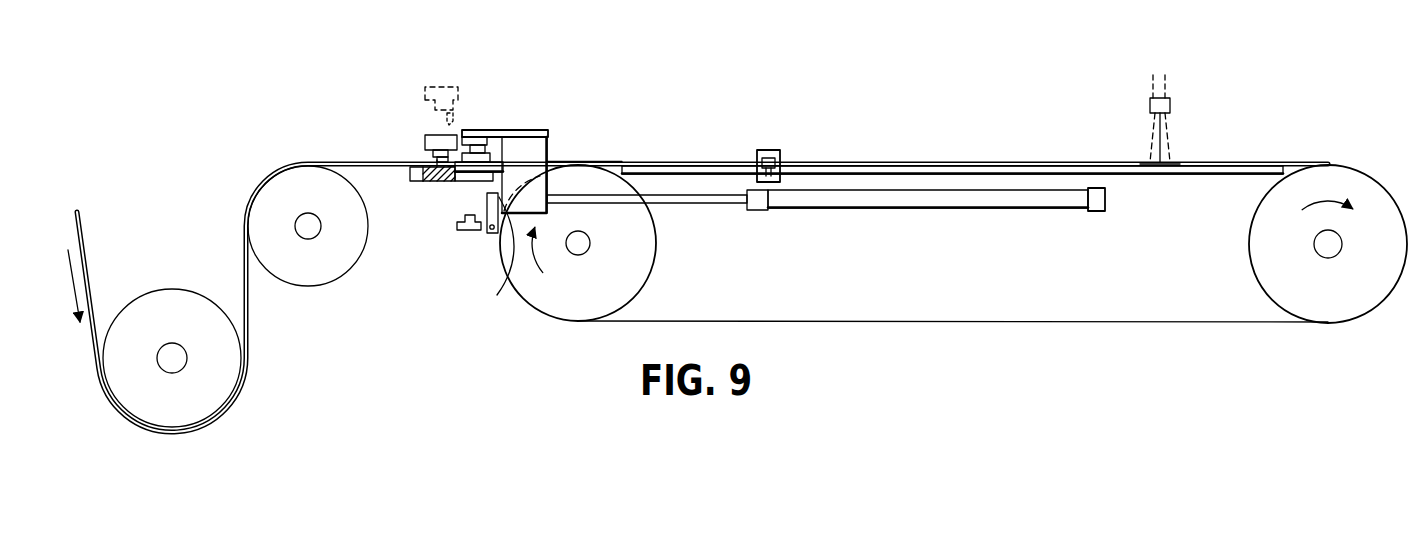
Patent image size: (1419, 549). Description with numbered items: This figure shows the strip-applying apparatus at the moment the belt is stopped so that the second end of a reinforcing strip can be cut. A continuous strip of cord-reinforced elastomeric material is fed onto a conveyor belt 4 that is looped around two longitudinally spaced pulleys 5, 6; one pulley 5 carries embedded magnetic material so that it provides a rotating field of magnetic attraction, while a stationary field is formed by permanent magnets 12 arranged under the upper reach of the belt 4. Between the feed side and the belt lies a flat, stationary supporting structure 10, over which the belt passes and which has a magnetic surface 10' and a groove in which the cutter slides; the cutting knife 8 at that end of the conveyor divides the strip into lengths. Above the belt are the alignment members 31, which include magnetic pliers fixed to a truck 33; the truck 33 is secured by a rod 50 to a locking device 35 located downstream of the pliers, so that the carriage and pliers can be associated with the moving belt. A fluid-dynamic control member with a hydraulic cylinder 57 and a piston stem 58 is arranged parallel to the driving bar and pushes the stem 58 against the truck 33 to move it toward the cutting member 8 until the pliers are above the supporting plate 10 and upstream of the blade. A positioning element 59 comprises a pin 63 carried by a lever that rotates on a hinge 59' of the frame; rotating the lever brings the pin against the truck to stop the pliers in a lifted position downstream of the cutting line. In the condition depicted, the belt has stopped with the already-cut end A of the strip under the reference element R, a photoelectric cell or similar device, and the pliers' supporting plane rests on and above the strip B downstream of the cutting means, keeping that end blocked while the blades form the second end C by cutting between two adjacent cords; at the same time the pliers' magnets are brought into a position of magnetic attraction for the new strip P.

The conveyor belt 4 is at (1003, 320).
The pulley 5 is at (1348, 290).
The pulley 6 is at (630, 273).
The cutting knife 8 is at (419, 129).
The supporting structure 10 is at (412, 201).
The magnetic surface 10' is at (391, 140).
The permanent magnets 12 is at (1135, 175).
The alignment members 31 is at (485, 126).
The truck 33 is at (547, 158).
The locking device 35 is at (772, 148).
The rod 50 is at (695, 163).
The hydraulic cylinder 57 is at (983, 212).
The stem 58 is at (683, 203).
The positioning element 59 is at (453, 249).
The hinge 59' is at (473, 247).
The pin 63 is at (497, 295).
The new strip P is at (245, 265).
The second end of the strip C is at (450, 170).
The strip B is at (930, 162).
The end of the strip A is at (1168, 163).
The reference element R is at (1150, 103).